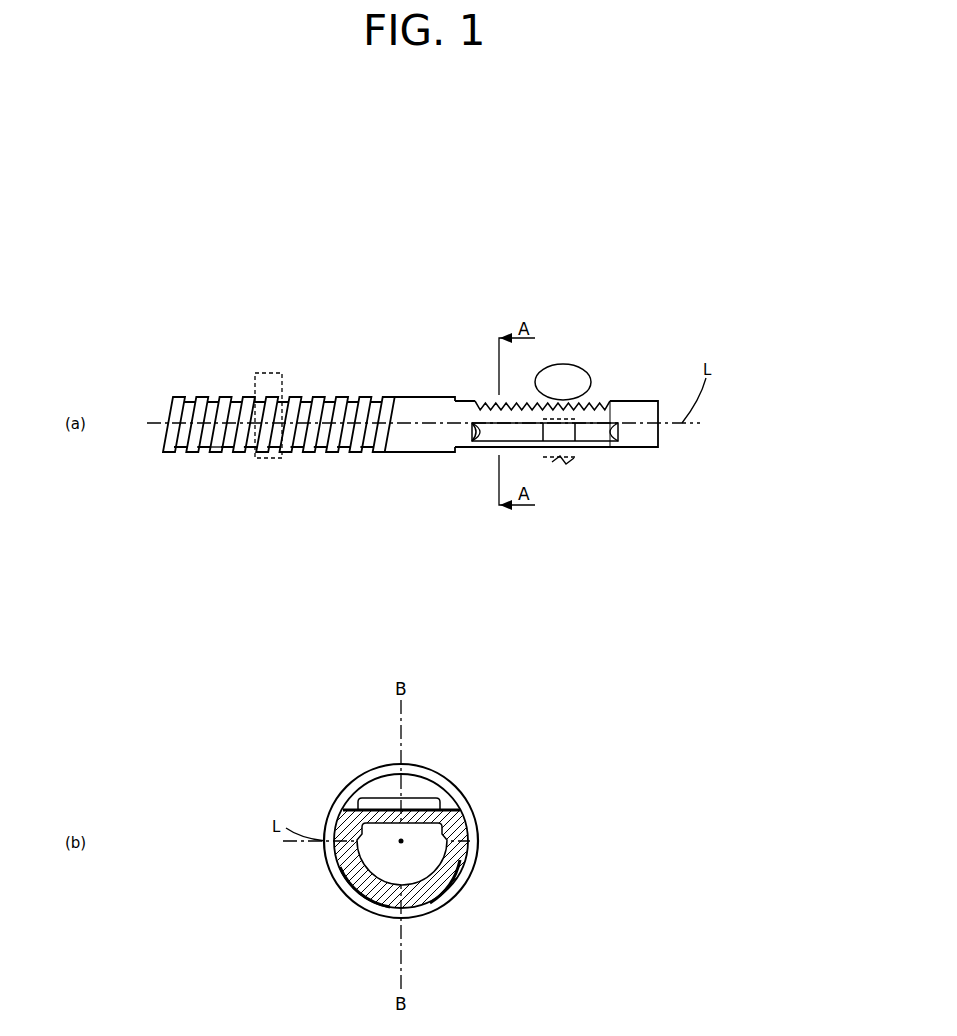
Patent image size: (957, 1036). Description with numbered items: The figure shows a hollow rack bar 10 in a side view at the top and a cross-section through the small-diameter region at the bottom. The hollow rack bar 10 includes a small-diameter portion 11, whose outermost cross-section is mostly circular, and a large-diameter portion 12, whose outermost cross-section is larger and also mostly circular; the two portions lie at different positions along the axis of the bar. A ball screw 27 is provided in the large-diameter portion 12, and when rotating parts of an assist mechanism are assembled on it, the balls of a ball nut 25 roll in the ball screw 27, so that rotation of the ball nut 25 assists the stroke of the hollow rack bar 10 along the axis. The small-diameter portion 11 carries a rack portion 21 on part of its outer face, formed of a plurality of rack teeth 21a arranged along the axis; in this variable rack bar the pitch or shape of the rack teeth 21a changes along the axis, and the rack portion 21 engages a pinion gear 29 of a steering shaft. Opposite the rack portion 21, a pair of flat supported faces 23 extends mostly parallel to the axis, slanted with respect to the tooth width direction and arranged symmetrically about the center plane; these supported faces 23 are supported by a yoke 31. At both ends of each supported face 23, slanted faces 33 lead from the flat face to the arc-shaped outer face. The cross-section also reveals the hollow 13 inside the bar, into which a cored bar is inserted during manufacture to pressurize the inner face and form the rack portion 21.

The hollow rack bar 10 is at (370, 366).
The small-diameter portion 11 is at (640, 401).
The large-diameter portion 12 is at (208, 397).
The hollow 13 is at (412, 877).
The rack portion 21 is at (487, 395).
The rack teeth 21a is at (600, 400).
The supported faces 23 is at (593, 445).
The ball nut 25 is at (262, 373).
The ball screw 27 is at (218, 446).
The pinion gear 29 is at (568, 365).
The yoke 31 is at (574, 447).
The slanted faces 33 is at (474, 445).